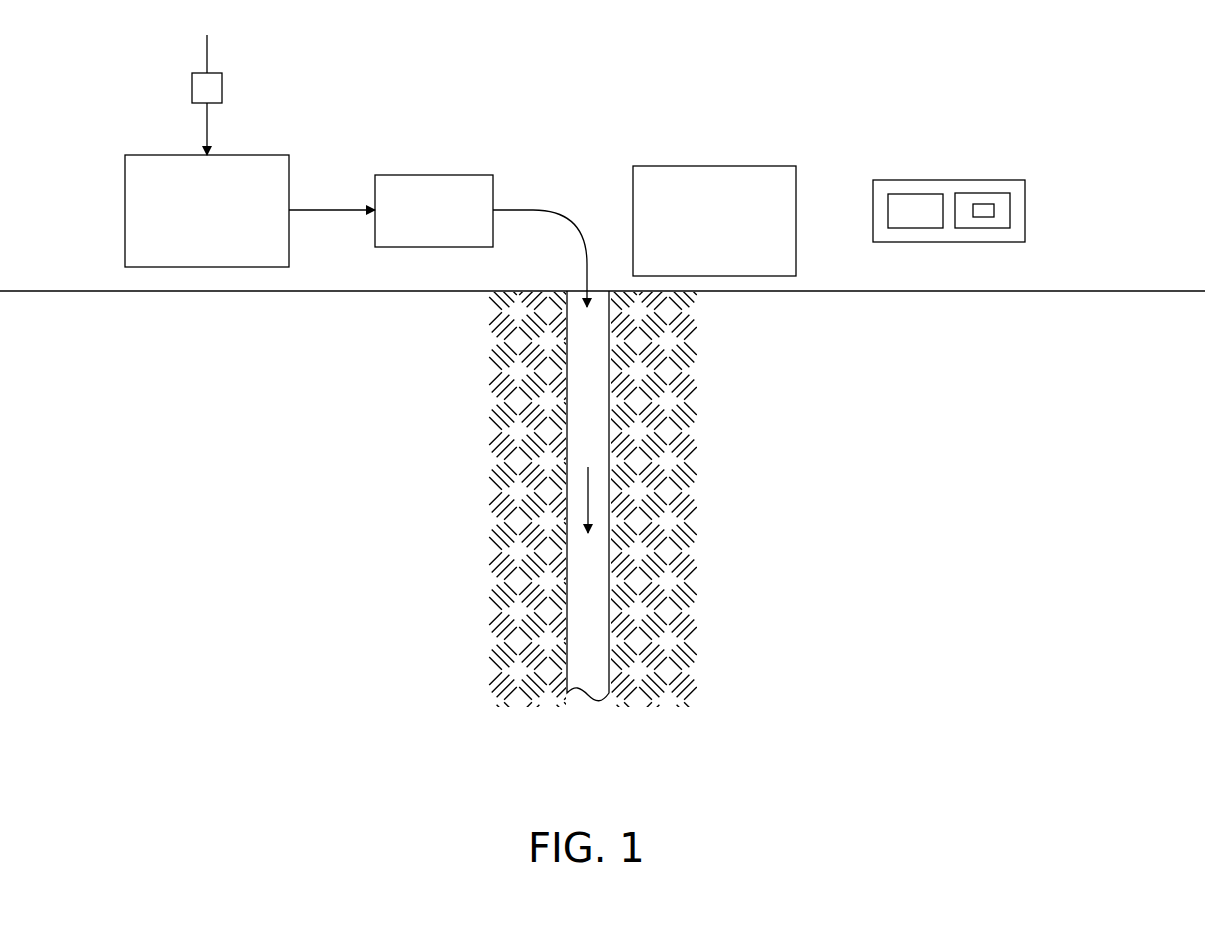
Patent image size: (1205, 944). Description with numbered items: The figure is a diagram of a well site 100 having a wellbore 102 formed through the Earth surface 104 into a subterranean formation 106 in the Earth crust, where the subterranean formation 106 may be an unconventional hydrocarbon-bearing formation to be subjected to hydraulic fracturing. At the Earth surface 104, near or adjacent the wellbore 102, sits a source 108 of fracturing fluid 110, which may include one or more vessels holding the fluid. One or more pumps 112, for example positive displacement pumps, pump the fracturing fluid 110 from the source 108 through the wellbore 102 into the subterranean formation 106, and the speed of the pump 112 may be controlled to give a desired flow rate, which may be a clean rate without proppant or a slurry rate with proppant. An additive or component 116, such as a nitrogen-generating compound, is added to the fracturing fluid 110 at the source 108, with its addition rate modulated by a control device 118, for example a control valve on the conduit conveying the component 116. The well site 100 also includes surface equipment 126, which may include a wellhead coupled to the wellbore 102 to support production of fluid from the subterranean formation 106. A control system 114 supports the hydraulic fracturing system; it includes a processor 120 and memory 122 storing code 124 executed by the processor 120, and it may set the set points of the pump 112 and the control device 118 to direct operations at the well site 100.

The well site 100 is at (605, 813).
The wellbore 102 is at (565, 457).
The Earth surface 104 is at (1105, 290).
The subterranean formation 106 is at (690, 436).
The source of fracturing fluid 108 is at (253, 155).
The fracturing fluid 110 is at (147, 233).
The pump 112 is at (427, 175).
The control system 114 is at (912, 180).
The component 116 is at (205, 53).
The control device 118 is at (192, 87).
The processor 120 is at (915, 212).
The memory 122 is at (1010, 212).
The code 124 is at (985, 217).
The surface equipment 126 is at (737, 166).